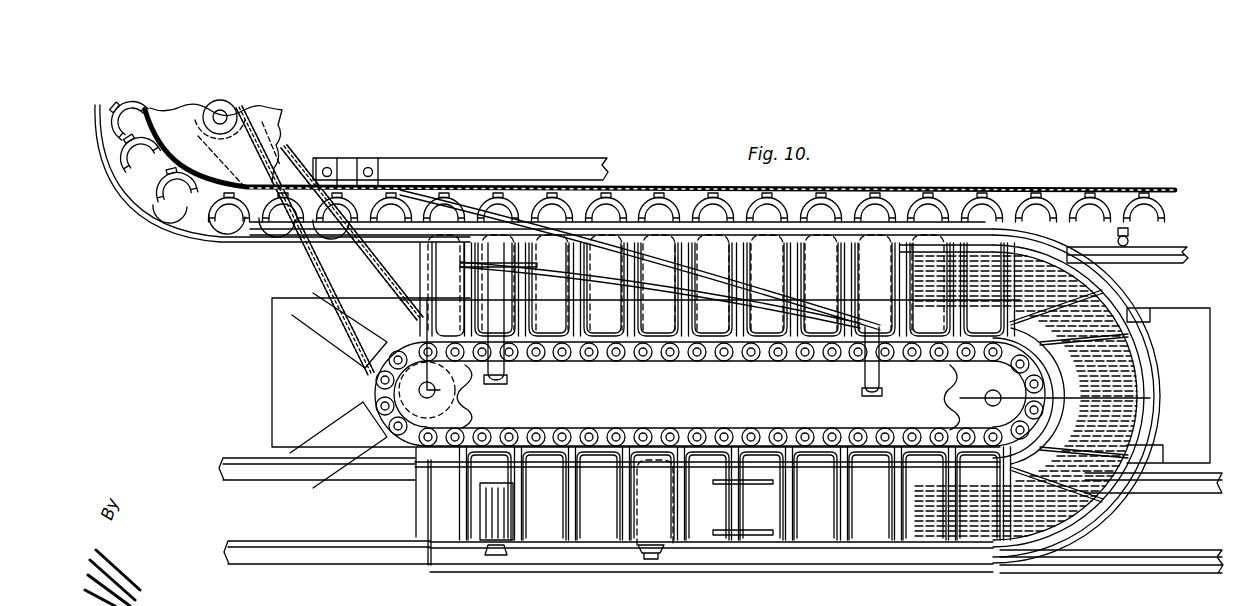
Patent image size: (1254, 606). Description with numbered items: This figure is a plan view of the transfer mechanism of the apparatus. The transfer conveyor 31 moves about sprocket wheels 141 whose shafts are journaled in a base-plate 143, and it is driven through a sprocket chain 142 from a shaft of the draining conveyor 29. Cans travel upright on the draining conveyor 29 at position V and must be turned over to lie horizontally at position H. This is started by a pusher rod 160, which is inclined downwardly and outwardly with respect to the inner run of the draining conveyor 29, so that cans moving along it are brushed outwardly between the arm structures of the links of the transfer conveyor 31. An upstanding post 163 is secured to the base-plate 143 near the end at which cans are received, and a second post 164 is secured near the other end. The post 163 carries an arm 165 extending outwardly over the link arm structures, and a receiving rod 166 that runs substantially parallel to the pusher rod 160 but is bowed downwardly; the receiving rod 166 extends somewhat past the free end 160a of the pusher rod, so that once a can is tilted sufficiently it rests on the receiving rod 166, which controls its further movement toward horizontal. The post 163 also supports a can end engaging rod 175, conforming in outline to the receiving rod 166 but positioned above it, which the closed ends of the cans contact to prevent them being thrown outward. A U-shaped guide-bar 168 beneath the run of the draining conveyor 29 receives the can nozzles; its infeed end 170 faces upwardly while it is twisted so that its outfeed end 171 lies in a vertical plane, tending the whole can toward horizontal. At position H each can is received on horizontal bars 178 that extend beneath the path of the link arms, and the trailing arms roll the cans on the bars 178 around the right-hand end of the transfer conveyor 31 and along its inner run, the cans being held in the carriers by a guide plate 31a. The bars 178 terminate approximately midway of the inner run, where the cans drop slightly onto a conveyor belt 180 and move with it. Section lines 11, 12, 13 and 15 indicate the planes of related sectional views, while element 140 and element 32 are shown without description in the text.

The draining conveyor 29 is at (487, 186).
The vertical position V is at (350, 170).
The section line 13- 13 is at (441, 137).
The pusher rod 160 is at (575, 208).
The free end of pusher arm 160a is at (702, 212).
The guide rod 140 is at (621, 186).
The U-shaped guide-bar 168 is at (645, 214).
The outfeed end of guide-bar 171 is at (902, 233).
The horizontal position H is at (935, 250).
The section line 11- 11 is at (931, 586).
The sprocket chain 142 is at (290, 258).
The infeed end of guide-bar 170 is at (356, 250).
The base-plate 143 is at (285, 380).
The arm 165 is at (505, 371).
The upstanding post 163 is at (507, 388).
The sprocket wheels 141 is at (478, 417).
The receiving rod 166 is at (664, 302).
The can end engaging rod 175 is at (738, 302).
The transfer conveyor 31 is at (780, 358).
The guide plate 31a is at (1150, 362).
The post 164 is at (864, 386).
The section line 12- 12 is at (1198, 408).
The section line 15- 15 is at (757, 520).
The conveyor belt 180 is at (606, 540).
The can 32 is at (705, 535).
The horizontal bars 178 is at (768, 536).